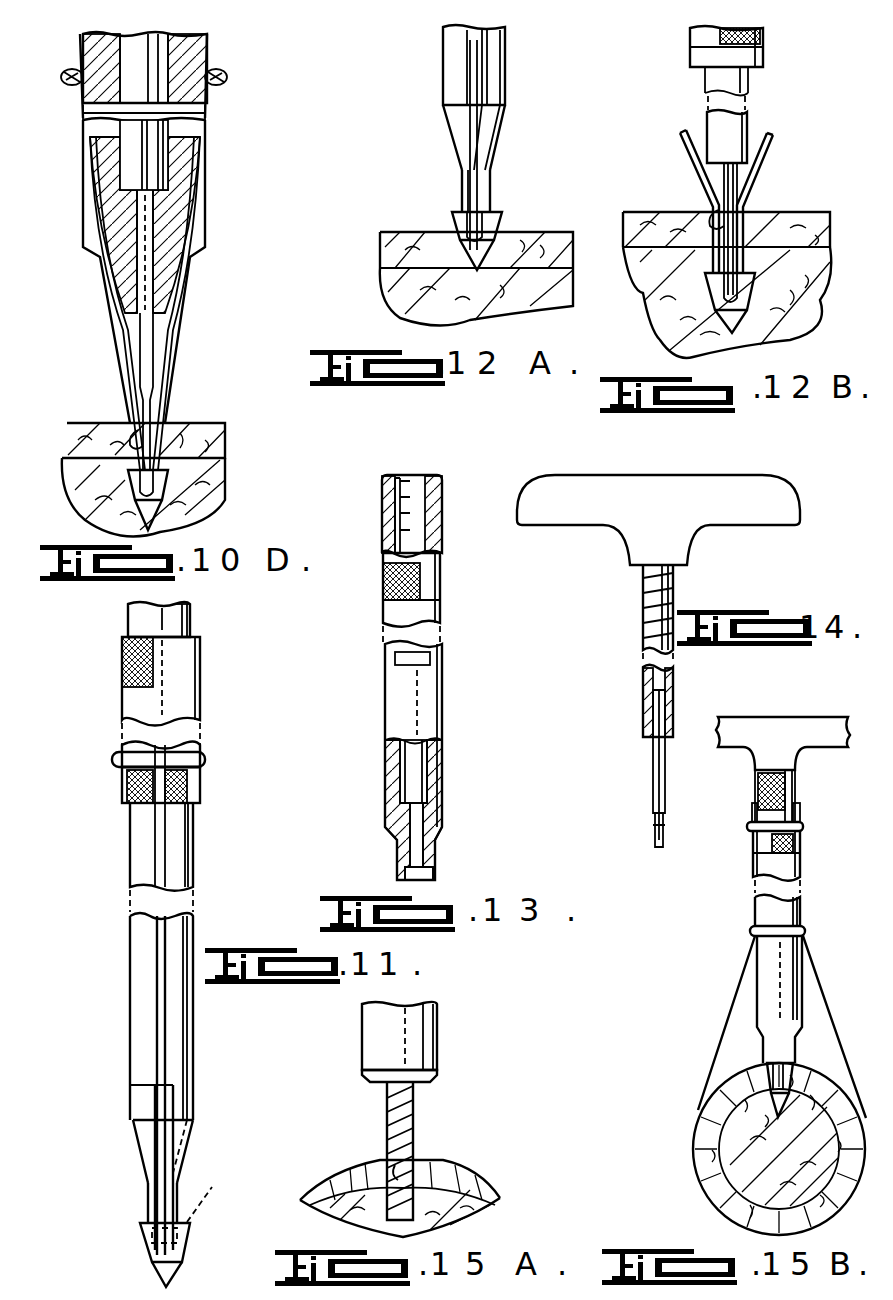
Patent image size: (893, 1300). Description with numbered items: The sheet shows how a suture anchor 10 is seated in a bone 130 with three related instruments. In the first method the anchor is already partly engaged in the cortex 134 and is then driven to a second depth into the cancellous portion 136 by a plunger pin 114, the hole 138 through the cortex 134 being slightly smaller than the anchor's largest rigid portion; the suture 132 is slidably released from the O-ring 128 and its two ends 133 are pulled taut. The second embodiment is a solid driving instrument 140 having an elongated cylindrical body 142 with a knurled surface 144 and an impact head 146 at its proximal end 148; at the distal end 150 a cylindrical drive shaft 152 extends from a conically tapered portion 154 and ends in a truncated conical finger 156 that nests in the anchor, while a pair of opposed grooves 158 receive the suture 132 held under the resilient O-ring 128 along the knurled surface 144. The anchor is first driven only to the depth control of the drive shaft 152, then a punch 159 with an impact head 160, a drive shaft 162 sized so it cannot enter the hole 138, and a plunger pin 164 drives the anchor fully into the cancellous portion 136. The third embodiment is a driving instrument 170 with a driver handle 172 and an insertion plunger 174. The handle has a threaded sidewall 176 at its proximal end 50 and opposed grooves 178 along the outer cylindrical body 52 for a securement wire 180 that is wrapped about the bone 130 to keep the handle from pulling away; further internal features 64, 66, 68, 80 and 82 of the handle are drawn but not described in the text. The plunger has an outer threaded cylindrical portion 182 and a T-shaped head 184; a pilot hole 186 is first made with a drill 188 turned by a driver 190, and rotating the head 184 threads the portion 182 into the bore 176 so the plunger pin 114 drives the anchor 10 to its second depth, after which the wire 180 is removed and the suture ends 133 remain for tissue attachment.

In FIG. 10D, the suture anchor 10 is at (132, 508).
In FIG. 12A, the suture anchor 10 is at (502, 216).
In FIG. 12B, the suture anchor 10 is at (730, 303).
In FIG. 11, the suture anchor 10 is at (150, 1260).
In FIG. 15B, the suture anchor 10 is at (770, 1098).
In FIG. 13, the proximal end of the driver handle 50 is at (428, 475).
In FIG. 13, the outer cylindrical body 52 is at (385, 703).
In FIG. 15B, the outer cylindrical body 52 is at (757, 910).
In FIG. 13, the shoulder 64 is at (418, 740).
In FIG. 13, the inner tube 66 is at (416, 815).
In FIG. 13, the end plug 68 is at (423, 868).
In FIG. 13, the tapered wall 80 is at (438, 797).
In FIG. 13, the inner sleeve 82 is at (400, 780).
In FIG. 14, the plunger pin 114 is at (653, 750).
In FIG. 10D, the resilient O-ring 128 is at (228, 78).
In FIG. 11, the resilient O-ring 128 is at (206, 760).
In FIG. 15B, the resilient O-ring 128 is at (747, 824).
In FIG. 10D, the bone 130 is at (186, 422).
In FIG. 15B, the bone 130 is at (732, 1078).
In FIG. 15A, the bone 130 is at (487, 1180).
In FIG. 10D, the suture 132 is at (183, 352).
In FIG. 12B, the suture 132 is at (774, 150).
In FIG. 11, the suture 132 is at (157, 1008).
In FIG. 15B, the suture 132 is at (760, 997).
In FIG. 15B, the two ends of the suture 133 is at (755, 805).
In FIG. 10D, the cortex 134 is at (226, 442).
In FIG. 12A, the cortex 134 is at (384, 242).
In FIG. 12B, the cortex 134 is at (726, 229).
In FIG. 15B, the cortex 134 is at (707, 1137).
In FIG. 15A, the cortex 134 is at (323, 1193).
In FIG. 10D, the cancellous portion 136 is at (220, 482).
In FIG. 12A, the cancellous portion 136 is at (392, 292).
In FIG. 12B, the cancellous portion 136 is at (727, 302).
In FIG. 15B, the cancellous portion 136 is at (727, 1163).
In FIG. 15A, the cancellous portion 136 is at (467, 1213).
In FIG. 10D, the hole 138 is at (136, 440).
In FIG. 12B, the hole 138 is at (718, 210).
In FIG. 11, the solid driving instrument 140 is at (225, 736).
In FIG. 12A, the elongated cylindrical body 142 is at (443, 58).
In FIG. 11, the elongated cylindrical body 142 is at (196, 838).
In FIG. 14, the elongated cylindrical body 142 is at (643, 627).
In FIG. 11, the knurled surface 144 is at (128, 686).
In FIG. 11, the impact head 146 is at (138, 620).
In FIG. 11, the proximal end 148 is at (185, 602).
In FIG. 11, the distal end 150 is at (145, 1227).
In FIG. 12A, the cylindrical drive shaft 152 is at (492, 182).
In FIG. 11, the cylindrical drive shaft 152 is at (147, 1200).
In FIG. 12A, the conically tapered portion 154 is at (502, 128).
In FIG. 11, the conically tapered portion 154 is at (137, 1133).
In FIG. 11, the truncated conical finger 156 is at (221, 1191).
In FIG. 12A, the opposed grooves 158 is at (470, 125).
In FIG. 11, the opposed grooves 158 is at (155, 1088).
In FIG. 12B, the punch 159 is at (778, 98).
In FIG. 12B, the impact head 160 is at (764, 38).
In FIG. 12B, the drive shaft 162 is at (744, 128).
In FIG. 12B, the plunger pin 164 is at (740, 250).
In FIG. 13, the driving instrument 170 is at (476, 500).
In FIG. 14, the driving instrument 170 is at (670, 466).
In FIG. 13, the driver handle 172 is at (441, 723).
In FIG. 15B, the driver handle 172 is at (800, 866).
In FIG. 14, the insertion plunger 174 is at (671, 697).
In FIG. 13, the threaded sidewall 176 is at (413, 478).
In FIG. 13, the opposed grooves 178 is at (430, 660).
In FIG. 15B, the opposed grooves 178 is at (773, 937).
In FIG. 15B, the securement wire 180 is at (810, 977).
In FIG. 14, the outer threaded cylindrical portion 182 is at (643, 588).
In FIG. 14, the T-shaped handle 184 is at (773, 500).
In FIG. 15B, the T-shaped handle 184 is at (800, 727).
In FIG. 15A, the pilot hole 186 is at (398, 1176).
In FIG. 15A, the drill 188 is at (414, 1112).
In FIG. 15A, the driver 190 is at (437, 1018).